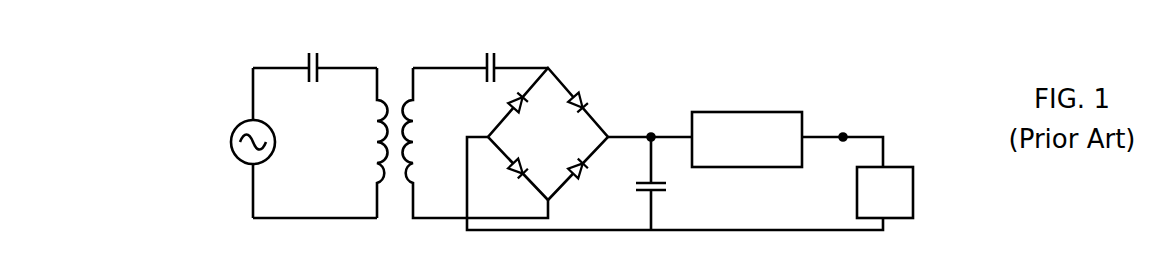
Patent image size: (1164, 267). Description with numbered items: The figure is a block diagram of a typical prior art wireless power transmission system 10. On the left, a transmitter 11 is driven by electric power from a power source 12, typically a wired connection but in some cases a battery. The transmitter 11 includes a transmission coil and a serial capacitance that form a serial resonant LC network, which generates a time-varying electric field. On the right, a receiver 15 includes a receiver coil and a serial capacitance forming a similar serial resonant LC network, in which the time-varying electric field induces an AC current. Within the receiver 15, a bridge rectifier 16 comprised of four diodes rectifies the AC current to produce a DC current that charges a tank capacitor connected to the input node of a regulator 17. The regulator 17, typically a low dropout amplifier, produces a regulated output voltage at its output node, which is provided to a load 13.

The wireless power transmission system 10 is at (152, 88).
The transmitter 11 is at (280, 47).
The power source 12 is at (242, 120).
The load 13 is at (898, 165).
The receiver 15 is at (664, 67).
The bridge rectifier 16 is at (578, 78).
The regulator 17 is at (735, 110).